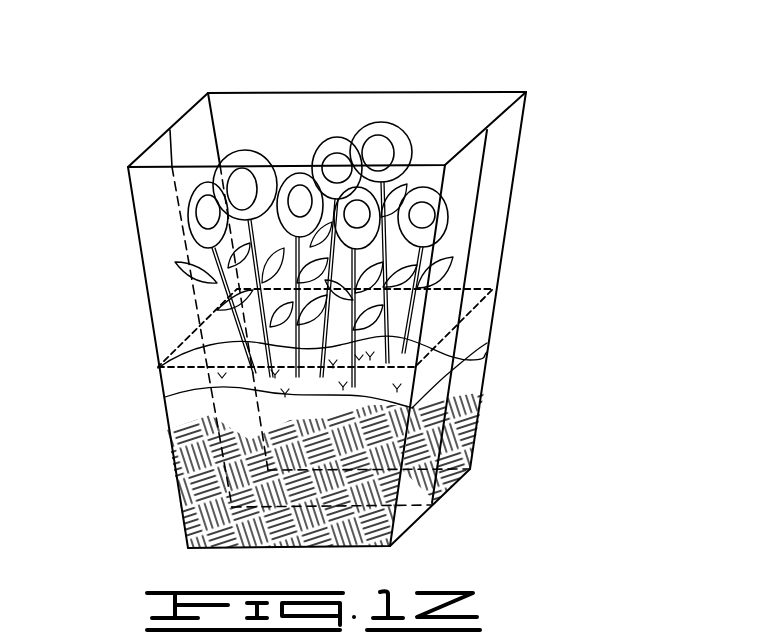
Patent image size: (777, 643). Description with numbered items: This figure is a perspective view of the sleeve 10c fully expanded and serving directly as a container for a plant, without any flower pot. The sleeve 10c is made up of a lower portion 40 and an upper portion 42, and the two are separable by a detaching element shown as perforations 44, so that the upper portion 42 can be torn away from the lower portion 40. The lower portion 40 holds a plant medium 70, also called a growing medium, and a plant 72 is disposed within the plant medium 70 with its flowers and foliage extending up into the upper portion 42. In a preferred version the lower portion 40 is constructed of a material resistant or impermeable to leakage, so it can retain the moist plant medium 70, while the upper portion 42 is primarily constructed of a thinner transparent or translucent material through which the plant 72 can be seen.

The sleeve 10c is at (517, 225).
The lower portion 40 is at (478, 423).
The upper portion 42 is at (520, 147).
The perforations 44 is at (190, 338).
The plant medium 70 is at (465, 357).
The plant 72 is at (385, 112).